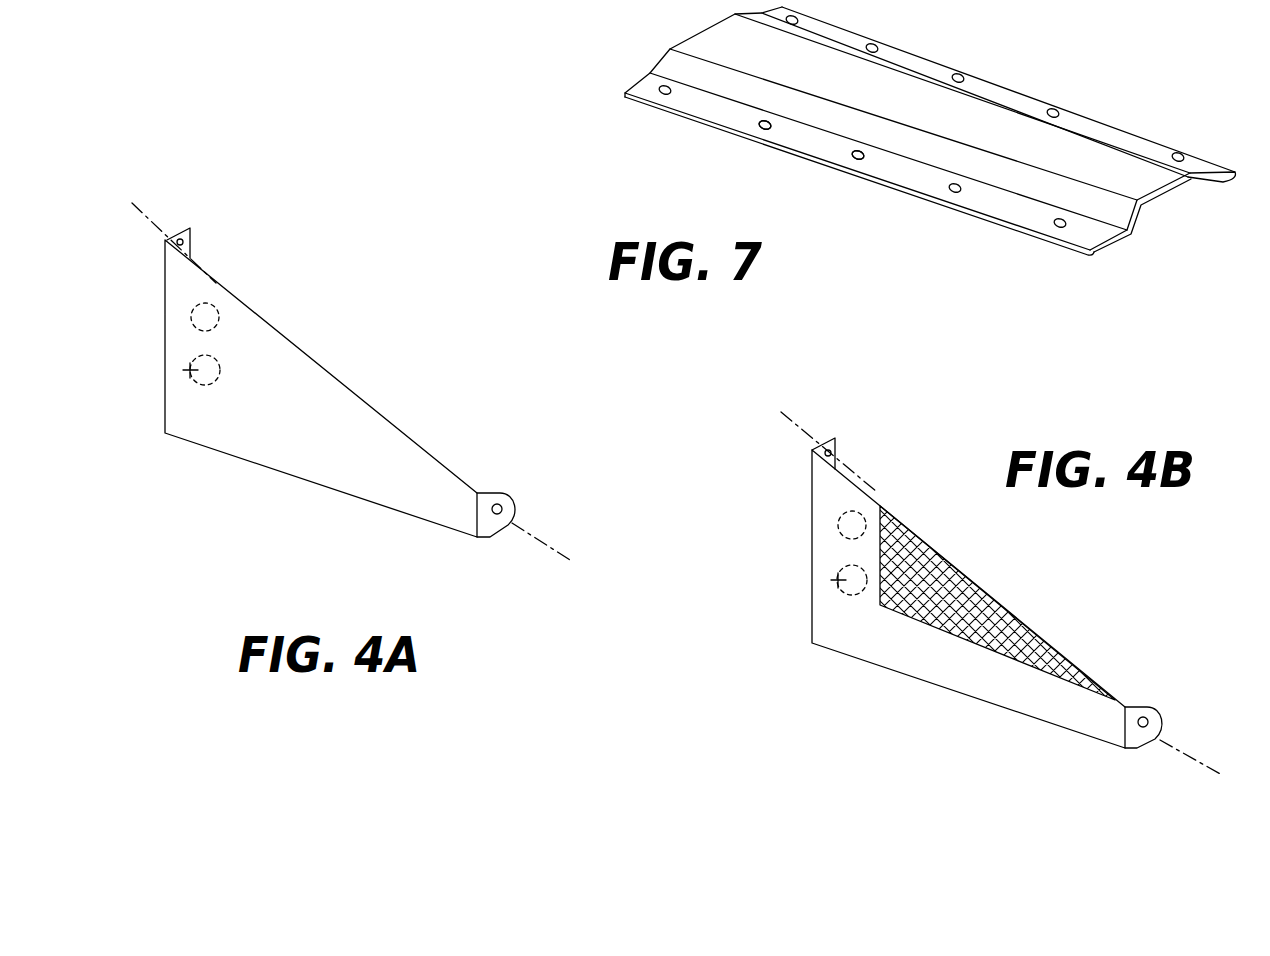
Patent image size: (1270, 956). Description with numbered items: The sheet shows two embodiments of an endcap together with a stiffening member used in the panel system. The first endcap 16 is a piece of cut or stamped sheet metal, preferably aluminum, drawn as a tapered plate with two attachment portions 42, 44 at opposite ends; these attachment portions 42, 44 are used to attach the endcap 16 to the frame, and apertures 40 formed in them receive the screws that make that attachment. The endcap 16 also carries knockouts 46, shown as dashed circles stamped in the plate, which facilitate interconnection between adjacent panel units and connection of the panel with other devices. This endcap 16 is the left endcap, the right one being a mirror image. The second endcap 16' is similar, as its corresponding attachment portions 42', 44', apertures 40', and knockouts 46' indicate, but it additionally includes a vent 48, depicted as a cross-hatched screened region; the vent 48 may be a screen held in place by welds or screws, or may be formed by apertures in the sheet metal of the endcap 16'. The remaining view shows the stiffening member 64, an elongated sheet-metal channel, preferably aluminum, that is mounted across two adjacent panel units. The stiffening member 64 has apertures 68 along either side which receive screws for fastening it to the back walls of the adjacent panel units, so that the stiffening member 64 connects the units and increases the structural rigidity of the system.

In FIG. 4A, the endcap 16 is at (273, 388).
In FIG. 4B, the endcap 16' is at (921, 599).
In FIG. 4A, the apertures 40 is at (351, 379).
In FIG. 4B, the apertures 40' is at (1001, 590).
In FIG. 4A, the attachment portion 42 is at (219, 225).
In FIG. 4B, the attachment portion 42' is at (868, 435).
In FIG. 4A, the attachment portion 44 is at (507, 478).
In FIG. 4B, the attachment portion 44' is at (1159, 689).
In FIG. 4A, the knockouts 46 is at (161, 344).
In FIG. 4B, the knockouts 46' is at (807, 553).
In FIG. 4B, the vent 48 is at (996, 606).
In FIG. 7, the stiffening member 64 is at (868, 244).
In FIG. 7, the apertures 68 is at (852, 156).